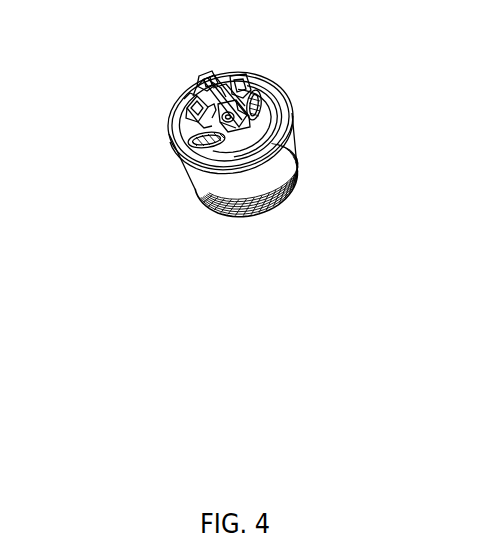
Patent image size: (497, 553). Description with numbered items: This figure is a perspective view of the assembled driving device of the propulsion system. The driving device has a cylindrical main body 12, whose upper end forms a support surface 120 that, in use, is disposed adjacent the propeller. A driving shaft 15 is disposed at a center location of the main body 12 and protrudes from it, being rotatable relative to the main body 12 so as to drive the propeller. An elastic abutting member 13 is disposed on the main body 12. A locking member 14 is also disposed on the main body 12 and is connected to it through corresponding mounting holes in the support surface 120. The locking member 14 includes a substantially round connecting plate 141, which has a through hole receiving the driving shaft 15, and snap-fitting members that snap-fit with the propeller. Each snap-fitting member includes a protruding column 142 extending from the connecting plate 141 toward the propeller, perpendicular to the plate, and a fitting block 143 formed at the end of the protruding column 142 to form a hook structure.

The main body 12 is at (212, 182).
The support surface 120 is at (182, 131).
The elastic abutting member 13 is at (192, 101).
The driving shaft 15 is at (199, 87).
The locking member 14 is at (325, 91).
The connecting plate 141 is at (310, 126).
The protruding column 142 is at (262, 102).
The fitting block 143 is at (244, 78).